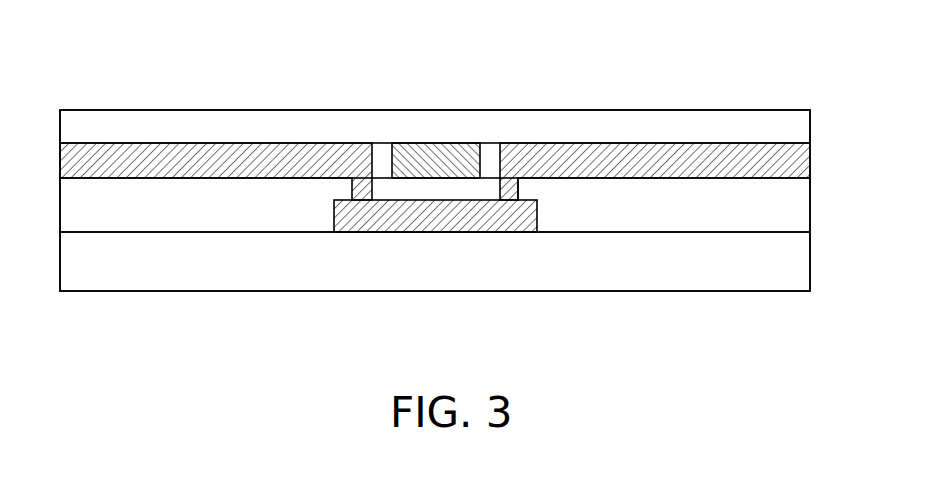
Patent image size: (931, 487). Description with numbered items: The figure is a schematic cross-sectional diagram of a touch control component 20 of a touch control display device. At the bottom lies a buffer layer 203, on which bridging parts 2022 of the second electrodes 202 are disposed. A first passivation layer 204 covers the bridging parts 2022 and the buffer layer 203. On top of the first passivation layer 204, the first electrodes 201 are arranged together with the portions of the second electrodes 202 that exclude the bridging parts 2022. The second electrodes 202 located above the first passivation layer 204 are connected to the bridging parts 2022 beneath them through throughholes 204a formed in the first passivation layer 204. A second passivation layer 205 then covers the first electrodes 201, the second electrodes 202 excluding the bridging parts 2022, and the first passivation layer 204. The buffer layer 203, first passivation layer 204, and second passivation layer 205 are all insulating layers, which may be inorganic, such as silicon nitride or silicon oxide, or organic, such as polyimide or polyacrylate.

The touch control component 20 is at (430, 69).
The first electrodes 201 is at (445, 163).
The second electrodes 202 is at (270, 165).
The bridging parts 2022 is at (350, 233).
The buffer layer 203 is at (733, 240).
The first passivation layer 204 is at (653, 207).
The throughholes 204a is at (518, 188).
The second passivation layer 205 is at (140, 130).